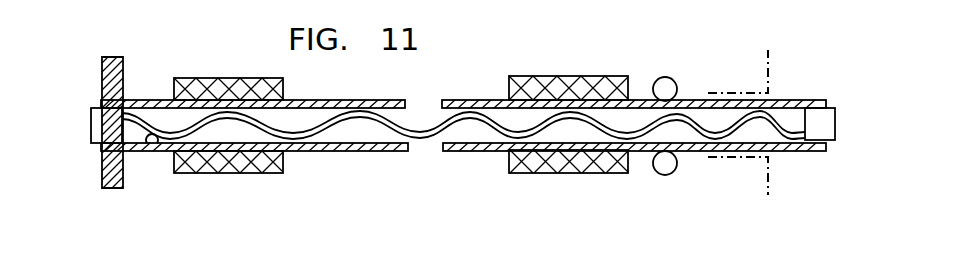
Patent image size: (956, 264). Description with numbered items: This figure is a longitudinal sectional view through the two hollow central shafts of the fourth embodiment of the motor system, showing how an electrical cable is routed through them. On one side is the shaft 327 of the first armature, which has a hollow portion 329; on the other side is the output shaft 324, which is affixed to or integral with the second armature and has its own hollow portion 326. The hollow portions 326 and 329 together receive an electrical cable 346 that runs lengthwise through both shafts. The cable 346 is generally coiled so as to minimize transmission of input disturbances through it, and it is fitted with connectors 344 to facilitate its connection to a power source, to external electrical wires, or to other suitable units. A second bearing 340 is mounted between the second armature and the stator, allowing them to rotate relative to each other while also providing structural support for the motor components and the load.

The connectors 344 is at (102, 126).
The hollow portion 329 is at (145, 148).
The shaft 327 is at (385, 166).
The electrical cable 346 is at (422, 140).
The second bearing 340 is at (681, 188).
The output shaft 324 is at (705, 163).
The hollow portion 326 is at (798, 152).